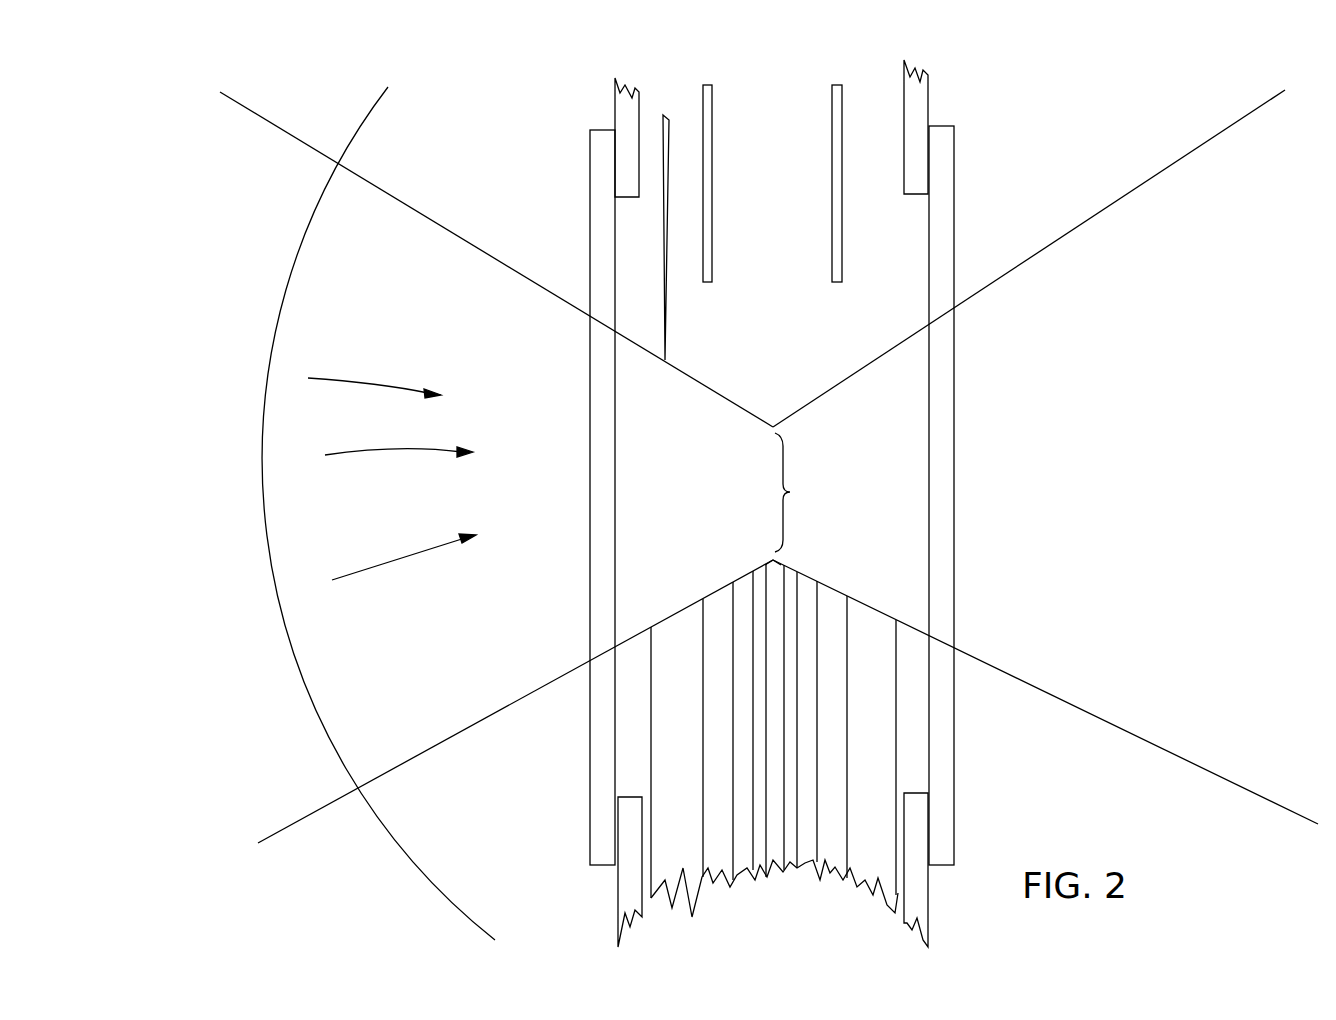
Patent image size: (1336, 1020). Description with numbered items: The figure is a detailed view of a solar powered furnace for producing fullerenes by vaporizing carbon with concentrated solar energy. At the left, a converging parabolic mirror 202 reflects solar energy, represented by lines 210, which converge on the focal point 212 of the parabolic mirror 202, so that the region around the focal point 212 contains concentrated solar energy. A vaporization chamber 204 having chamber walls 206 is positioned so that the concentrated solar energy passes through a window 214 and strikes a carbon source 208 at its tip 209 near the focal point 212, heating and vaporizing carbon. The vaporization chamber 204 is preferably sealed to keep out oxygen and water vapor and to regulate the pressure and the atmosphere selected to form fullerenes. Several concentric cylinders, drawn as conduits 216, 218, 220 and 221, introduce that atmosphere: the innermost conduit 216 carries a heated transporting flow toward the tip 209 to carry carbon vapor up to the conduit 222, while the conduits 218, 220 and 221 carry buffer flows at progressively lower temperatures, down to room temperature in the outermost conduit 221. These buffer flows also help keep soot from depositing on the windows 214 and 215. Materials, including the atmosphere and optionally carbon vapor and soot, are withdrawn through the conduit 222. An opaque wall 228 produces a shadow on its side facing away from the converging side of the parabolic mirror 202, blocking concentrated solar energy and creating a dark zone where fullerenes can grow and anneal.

The parabolic mirror 202 is at (301, 243).
The vaporization chamber 204 is at (997, 328).
The chamber walls 206 is at (932, 105).
The carbon source 208 is at (767, 863).
The tip 209 is at (773, 578).
The lines representing reflected solar energy 210 is at (378, 560).
The focal point 212 is at (790, 492).
The window 214 is at (590, 262).
The window 215 is at (955, 211).
The conduit 216 is at (793, 867).
The conduit 218 is at (760, 870).
The conduit 220 is at (775, 737).
The conduit 221 is at (773, 759).
The conduit 222 is at (842, 260).
The opaque wall 228 is at (656, 288).